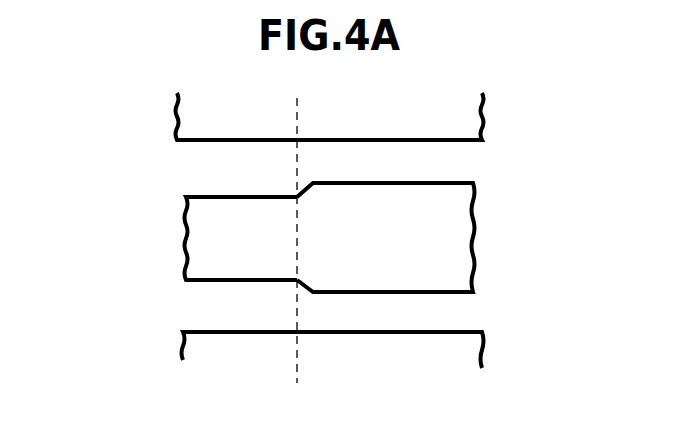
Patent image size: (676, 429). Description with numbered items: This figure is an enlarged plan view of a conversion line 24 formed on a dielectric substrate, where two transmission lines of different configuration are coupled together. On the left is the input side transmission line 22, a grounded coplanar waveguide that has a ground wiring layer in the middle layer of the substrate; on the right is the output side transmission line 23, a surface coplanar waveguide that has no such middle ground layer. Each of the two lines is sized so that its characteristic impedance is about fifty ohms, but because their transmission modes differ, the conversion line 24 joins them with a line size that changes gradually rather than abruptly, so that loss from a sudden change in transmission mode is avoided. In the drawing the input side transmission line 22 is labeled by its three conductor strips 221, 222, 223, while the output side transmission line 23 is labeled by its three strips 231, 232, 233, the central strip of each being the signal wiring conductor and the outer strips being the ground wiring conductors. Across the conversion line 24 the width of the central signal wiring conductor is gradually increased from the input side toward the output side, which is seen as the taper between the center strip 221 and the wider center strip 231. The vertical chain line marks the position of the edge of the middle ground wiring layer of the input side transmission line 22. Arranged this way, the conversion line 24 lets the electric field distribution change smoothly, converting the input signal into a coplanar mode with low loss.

The input side transmission line 22 is at (95, 93).
The output side transmission line 23 is at (562, 95).
The conversion line 24 is at (307, 237).
The first core layer 221 is at (207, 240).
The first upper layer 222 is at (207, 118).
The first lower layer 223 is at (207, 352).
The second core layer 231 is at (465, 246).
The second upper layer 232 is at (465, 122).
The second lower layer 233 is at (465, 349).